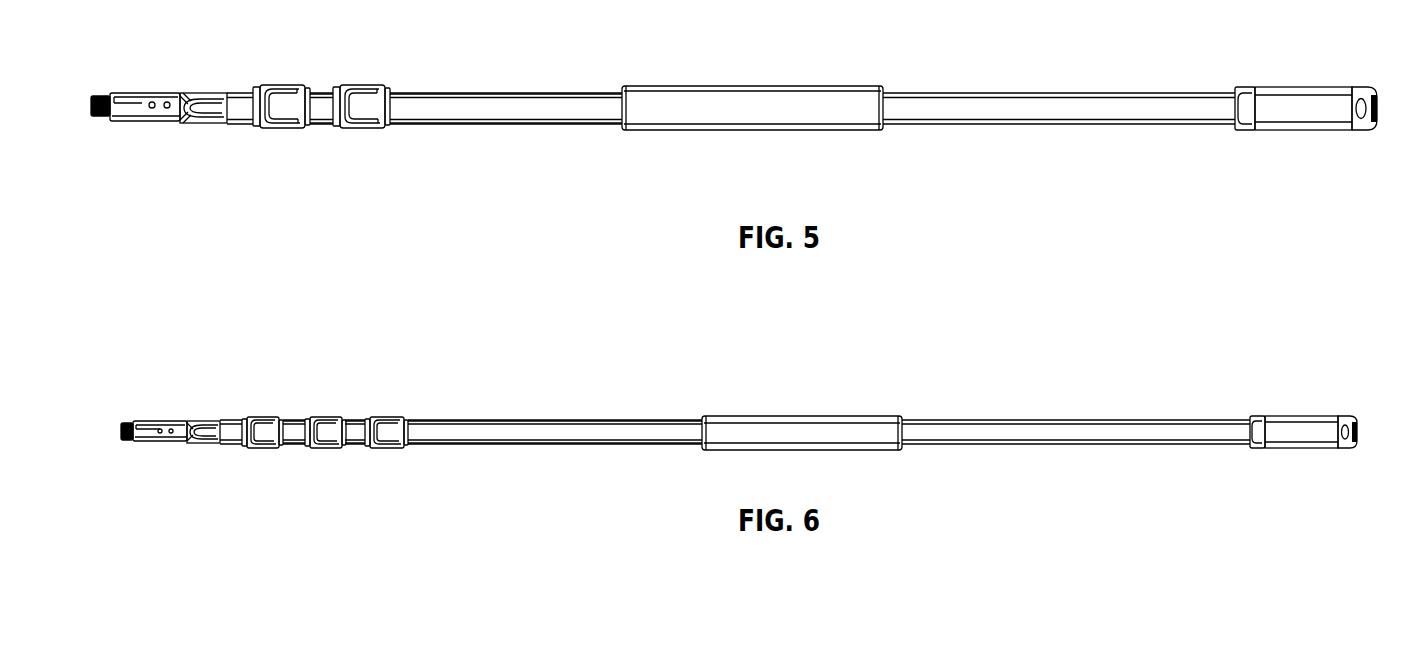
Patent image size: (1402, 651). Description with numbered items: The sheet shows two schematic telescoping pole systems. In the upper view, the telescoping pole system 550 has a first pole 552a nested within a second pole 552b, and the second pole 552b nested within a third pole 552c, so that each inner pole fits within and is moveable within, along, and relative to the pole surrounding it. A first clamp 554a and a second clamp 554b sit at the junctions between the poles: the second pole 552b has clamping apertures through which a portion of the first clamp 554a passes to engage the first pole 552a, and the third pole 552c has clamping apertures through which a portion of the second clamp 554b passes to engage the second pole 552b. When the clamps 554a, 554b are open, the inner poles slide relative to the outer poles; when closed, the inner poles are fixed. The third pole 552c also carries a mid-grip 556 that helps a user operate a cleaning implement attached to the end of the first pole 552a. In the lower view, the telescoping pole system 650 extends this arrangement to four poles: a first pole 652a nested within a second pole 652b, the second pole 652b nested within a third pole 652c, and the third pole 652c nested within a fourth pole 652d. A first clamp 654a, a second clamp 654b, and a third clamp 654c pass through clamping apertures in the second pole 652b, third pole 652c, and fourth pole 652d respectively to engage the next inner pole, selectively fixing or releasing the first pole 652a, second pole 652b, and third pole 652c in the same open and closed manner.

In FIG. 5, the telescoping pole system 550 is at (1070, 73).
In FIG. 5, the first pole 552a is at (243, 92).
In FIG. 5, the second pole 552b is at (325, 92).
In FIG. 5, the third pole 552c is at (478, 92).
In FIG. 5, the first clamp 554a is at (283, 129).
In FIG. 5, the second clamp 554b is at (360, 130).
In FIG. 5, the mid-grip 556 is at (750, 86).
In FIG. 6, the telescoping pole system 650 is at (1070, 348).
In FIG. 6, the first pole 652a is at (228, 421).
In FIG. 6, the second pole 652b is at (293, 421).
In FIG. 6, the third pole 652c is at (355, 421).
In FIG. 6, the fourth pole 652d is at (468, 420).
In FIG. 6, the first clamp 654a is at (263, 451).
In FIG. 6, the second clamp 654b is at (318, 451).
In FIG. 6, the third clamp 654c is at (387, 451).